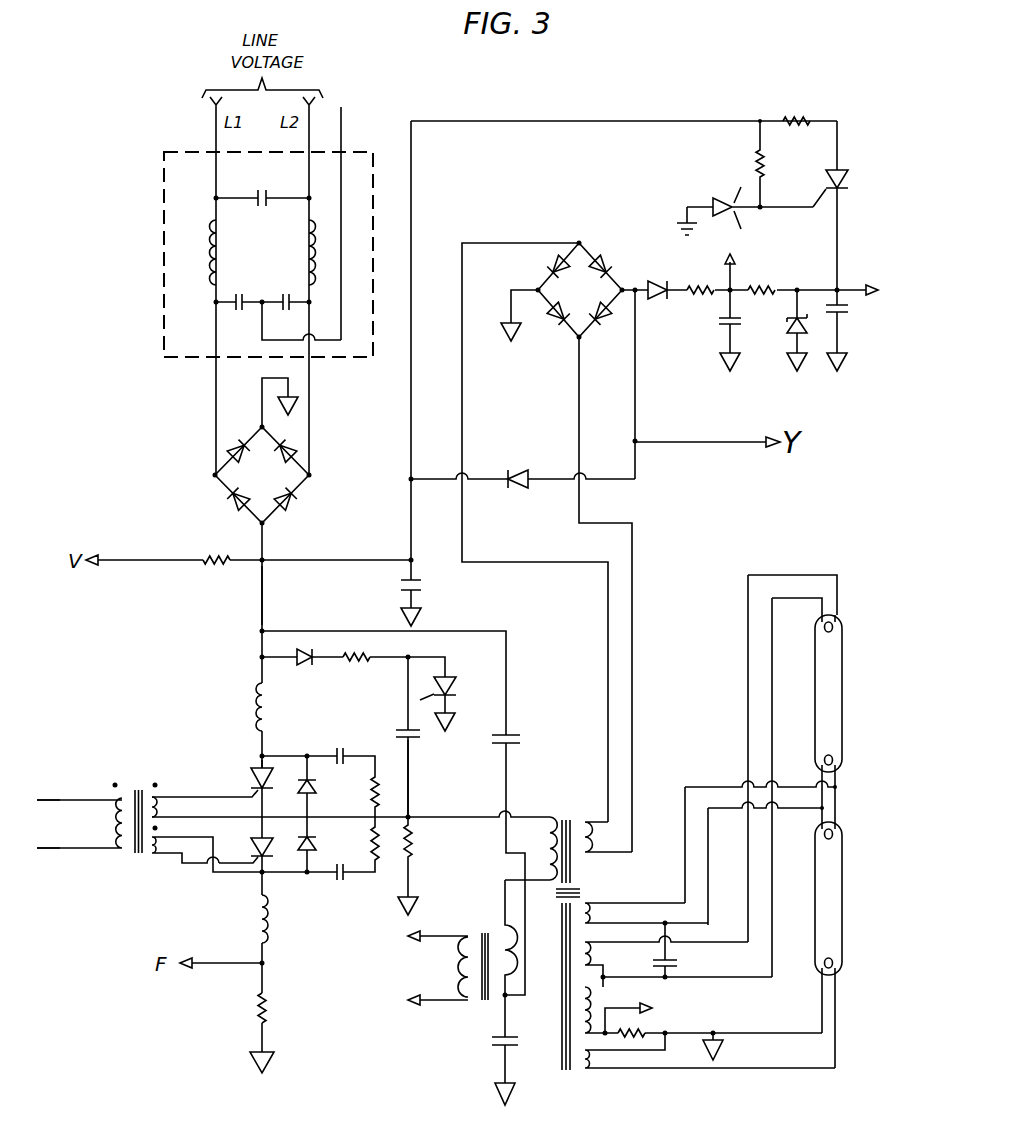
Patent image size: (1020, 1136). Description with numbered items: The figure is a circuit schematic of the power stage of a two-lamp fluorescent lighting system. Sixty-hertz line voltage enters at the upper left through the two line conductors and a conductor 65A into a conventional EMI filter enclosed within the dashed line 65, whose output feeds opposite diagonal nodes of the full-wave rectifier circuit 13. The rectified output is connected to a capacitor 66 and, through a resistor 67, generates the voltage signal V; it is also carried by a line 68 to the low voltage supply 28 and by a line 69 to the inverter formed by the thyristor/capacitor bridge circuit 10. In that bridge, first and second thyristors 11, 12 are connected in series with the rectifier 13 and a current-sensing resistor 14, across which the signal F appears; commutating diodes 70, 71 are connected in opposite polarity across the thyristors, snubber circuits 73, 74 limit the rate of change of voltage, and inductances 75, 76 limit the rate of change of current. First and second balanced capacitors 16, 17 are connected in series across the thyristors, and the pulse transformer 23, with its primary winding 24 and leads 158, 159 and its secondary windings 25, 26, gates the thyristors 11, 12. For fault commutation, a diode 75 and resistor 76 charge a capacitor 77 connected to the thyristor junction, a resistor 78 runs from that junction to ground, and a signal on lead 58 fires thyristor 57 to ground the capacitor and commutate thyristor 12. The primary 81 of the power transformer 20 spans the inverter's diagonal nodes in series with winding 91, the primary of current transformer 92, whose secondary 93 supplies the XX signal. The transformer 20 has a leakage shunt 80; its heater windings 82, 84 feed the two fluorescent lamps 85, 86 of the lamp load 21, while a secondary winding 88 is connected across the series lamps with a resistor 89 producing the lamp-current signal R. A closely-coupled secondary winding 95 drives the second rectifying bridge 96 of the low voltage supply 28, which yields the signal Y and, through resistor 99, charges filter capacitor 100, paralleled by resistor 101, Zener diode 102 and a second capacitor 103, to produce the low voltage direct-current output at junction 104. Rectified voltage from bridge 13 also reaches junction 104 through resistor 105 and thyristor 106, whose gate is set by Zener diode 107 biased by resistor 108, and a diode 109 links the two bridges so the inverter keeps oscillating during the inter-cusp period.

The EMI filter 65 is at (164, 153).
The conductor 65A is at (341, 118).
The full-wave rectifier circuit 13 is at (250, 484).
The resistor 67 is at (215, 551).
The line 69 is at (266, 596).
The capacitor 66 is at (404, 583).
The line 68 is at (409, 445).
The low voltage supply 28 is at (641, 194).
The second rectifying bridge circuit 96 is at (566, 298).
The resistor 99 is at (665, 272).
The filter capacitor 100 is at (722, 327).
The resistor 101 is at (757, 278).
The Zener diode 102 is at (790, 326).
The second capacitor 103 is at (849, 318).
The common junction 104 is at (823, 286).
The resistor 105 is at (800, 113).
The thyristor 106 is at (843, 163).
The Zener diode 107 is at (730, 198).
The resistor 108 is at (765, 161).
The diode 109 is at (524, 471).
The inductance 75 is at (308, 664).
The inductance 76 is at (374, 655).
The thyristor 57 is at (450, 678).
The lead 58 is at (426, 705).
The snubber circuit 73 is at (374, 741).
The capacitor 77 is at (410, 759).
The first balanced capacitor 16 is at (510, 727).
The power transformer 20 is at (670, 917).
The closely-coupled secondary winding 95 is at (603, 830).
The pulse transformer 23 is at (149, 814).
The first secondary winding 25 is at (160, 796).
The first thyristor 11 is at (260, 765).
The thyristor/capacitor bridge circuit 10 is at (272, 806).
The commutating diode 70 is at (317, 787).
The second thyristor 12 is at (254, 846).
The commutating diode 71 is at (316, 841).
The lead 158 is at (58, 799).
The lead 159 is at (58, 848).
The primary winding 24 is at (124, 858).
The second secondary winding 26 is at (157, 858).
The snubber circuit 74 is at (320, 837).
The resistor 78 is at (414, 841).
The primary winding 81 is at (545, 846).
The shunt 80 is at (589, 895).
The heater winding 82 is at (600, 918).
The secondary winding 88 is at (598, 997).
The resistor 89 is at (636, 1030).
The heater winding 84 is at (606, 1069).
The fluorescent lamp 85 is at (843, 695).
The fluorescent lamp 86 is at (843, 857).
The lamp load 21 is at (782, 821).
The current-sensing resistor 14 is at (270, 1007).
The winding 91 is at (508, 931).
The secondary 93 is at (462, 969).
The current transformer 92 is at (451, 975).
The second balanced capacitor 17 is at (514, 1031).